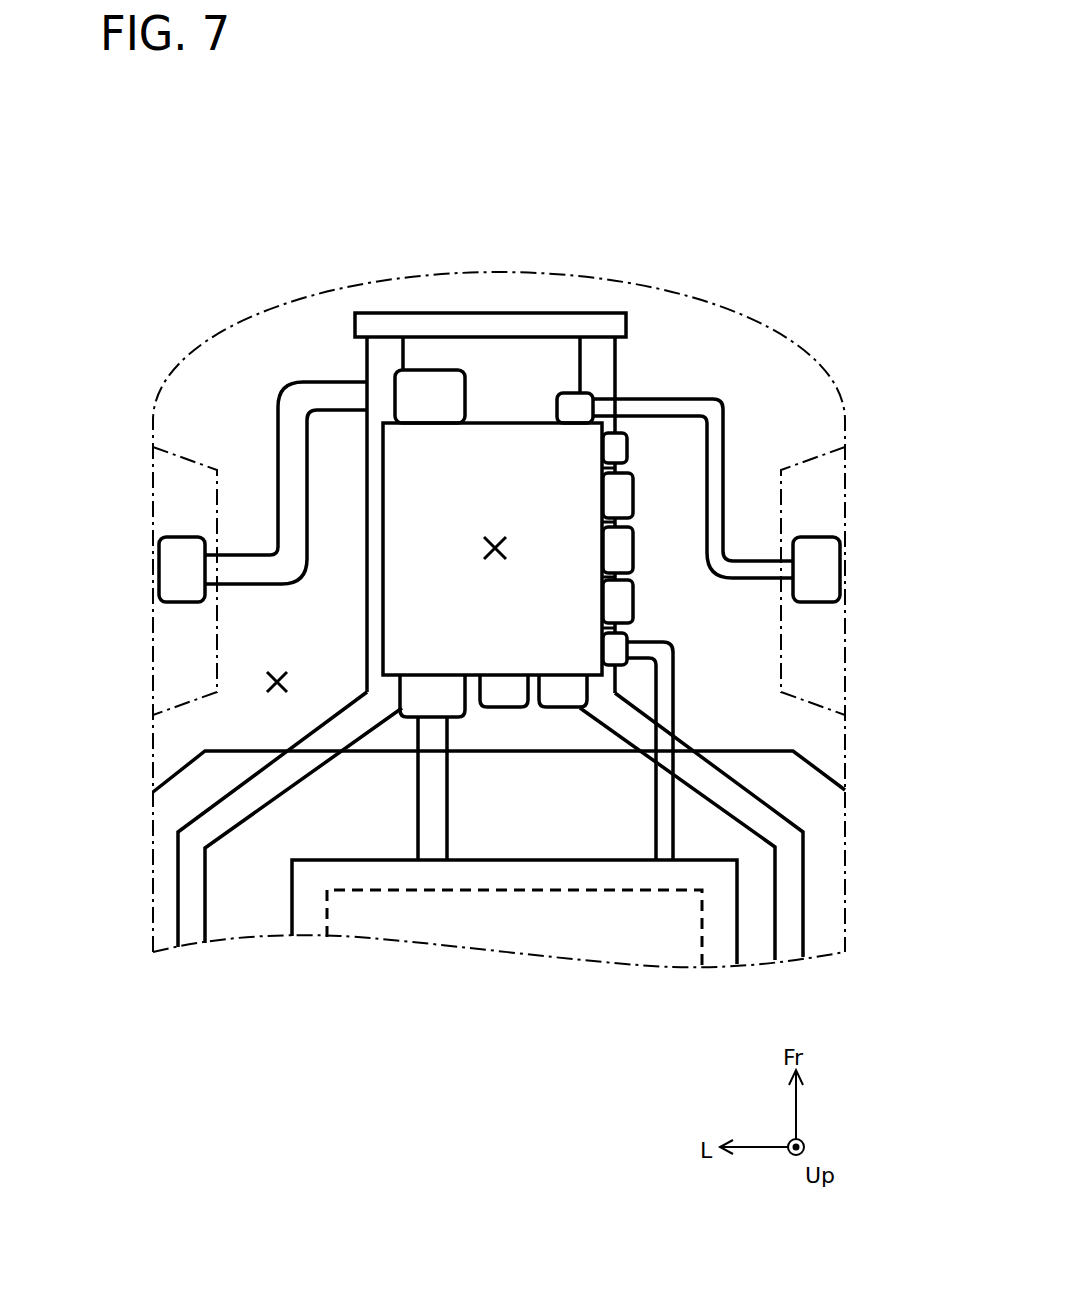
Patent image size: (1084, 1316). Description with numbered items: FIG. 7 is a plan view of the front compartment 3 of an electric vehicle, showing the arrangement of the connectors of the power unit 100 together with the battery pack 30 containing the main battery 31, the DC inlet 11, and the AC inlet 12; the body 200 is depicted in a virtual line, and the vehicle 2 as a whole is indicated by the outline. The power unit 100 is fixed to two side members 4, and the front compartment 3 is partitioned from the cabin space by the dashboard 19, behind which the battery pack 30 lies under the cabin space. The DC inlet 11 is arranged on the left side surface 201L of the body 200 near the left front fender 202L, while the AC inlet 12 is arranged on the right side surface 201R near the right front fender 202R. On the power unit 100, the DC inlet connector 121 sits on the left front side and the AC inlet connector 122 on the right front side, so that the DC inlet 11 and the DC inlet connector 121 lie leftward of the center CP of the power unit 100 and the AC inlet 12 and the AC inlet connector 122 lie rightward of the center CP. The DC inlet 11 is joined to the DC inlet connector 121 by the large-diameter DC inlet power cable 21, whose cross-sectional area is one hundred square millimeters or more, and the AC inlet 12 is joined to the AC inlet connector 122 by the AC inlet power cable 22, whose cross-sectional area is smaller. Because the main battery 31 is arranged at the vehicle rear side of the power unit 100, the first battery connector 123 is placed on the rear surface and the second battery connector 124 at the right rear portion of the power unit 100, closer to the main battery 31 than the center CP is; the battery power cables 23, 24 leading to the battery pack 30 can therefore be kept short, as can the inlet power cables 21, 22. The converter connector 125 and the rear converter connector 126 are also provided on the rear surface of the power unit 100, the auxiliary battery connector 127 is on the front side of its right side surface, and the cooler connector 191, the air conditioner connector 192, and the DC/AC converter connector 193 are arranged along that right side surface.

The vehicle body 2 is at (187, 260).
The front compartment 3 is at (267, 678).
The side member 4 is at (363, 368).
The DC inlet 11 is at (175, 572).
The AC inlet 12 is at (825, 568).
The dashboard 19 is at (823, 772).
The DC inlet power cable 21 is at (278, 447).
The AC inlet power cable 22 is at (670, 398).
The battery power cable 23 is at (450, 820).
The battery power cable 24 is at (677, 715).
The battery pack 30 is at (737, 932).
The main battery 31 is at (677, 960).
The power unit 100 is at (527, 440).
The DC inlet connector 121 is at (440, 368).
The AC inlet connector 122 is at (585, 393).
The first battery connector 123 is at (400, 712).
The second battery connector 124 is at (627, 640).
The converter connector 125 is at (560, 707).
The rear converter connector 126 is at (500, 707).
The auxiliary battery connector 127 is at (628, 440).
The cooler connector 191 is at (633, 480).
The air conditioner connector 192 is at (633, 542).
The DC/AC converter connector 193 is at (633, 602).
The body 200 is at (215, 943).
The left side surface 201L is at (146, 883).
The right side surface 201R is at (866, 875).
The left front fender 202L is at (160, 487).
The right front fender 202R is at (840, 486).
The center CP is at (496, 540).